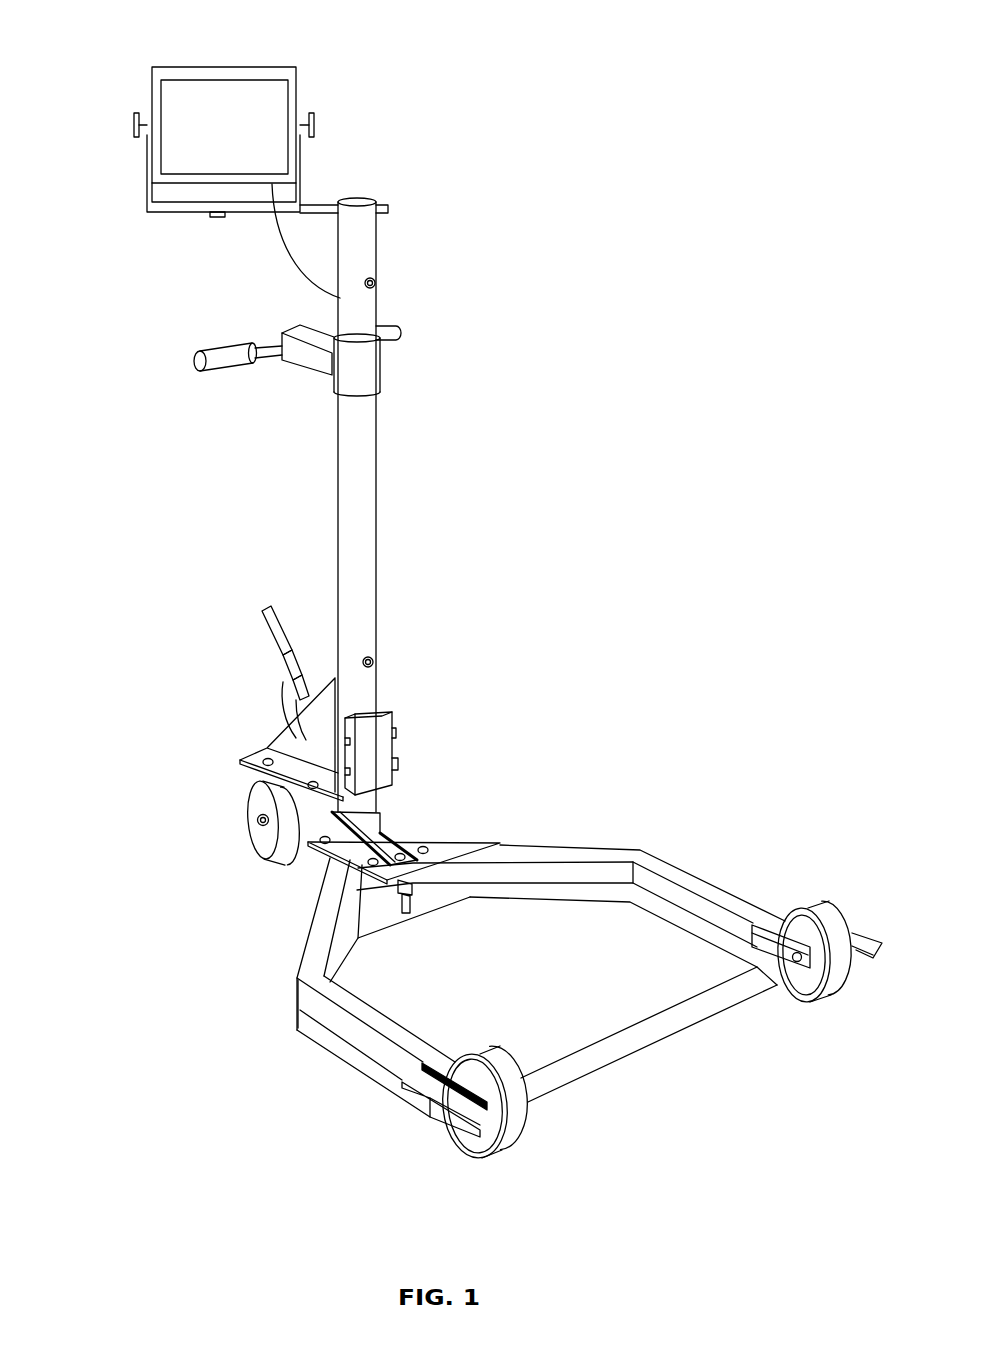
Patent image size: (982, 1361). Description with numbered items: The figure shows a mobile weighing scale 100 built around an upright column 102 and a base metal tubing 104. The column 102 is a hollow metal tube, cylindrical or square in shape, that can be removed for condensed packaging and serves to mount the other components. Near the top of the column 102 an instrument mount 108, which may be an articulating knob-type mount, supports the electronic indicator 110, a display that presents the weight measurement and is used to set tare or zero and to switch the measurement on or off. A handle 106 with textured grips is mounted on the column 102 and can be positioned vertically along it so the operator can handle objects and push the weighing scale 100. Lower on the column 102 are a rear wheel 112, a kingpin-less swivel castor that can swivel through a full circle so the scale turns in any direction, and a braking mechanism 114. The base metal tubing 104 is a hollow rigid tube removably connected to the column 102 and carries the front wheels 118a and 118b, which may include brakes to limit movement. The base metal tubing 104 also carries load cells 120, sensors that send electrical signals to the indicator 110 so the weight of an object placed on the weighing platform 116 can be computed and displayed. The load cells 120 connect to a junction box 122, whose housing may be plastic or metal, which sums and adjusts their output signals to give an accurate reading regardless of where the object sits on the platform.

The weighing scale 100 is at (116, 44).
The column 102 is at (370, 458).
The base metal tubing 104 is at (307, 1002).
The handle 106 is at (194, 362).
The instrument mount 108 is at (366, 196).
The electronic indicator 110 is at (145, 160).
The rear wheel 112 is at (249, 832).
The braking mechanism 114 is at (257, 613).
The weighing platform 116 is at (592, 986).
The front wheel 118a is at (460, 1143).
The front wheel 118b is at (857, 972).
The load cells 120 is at (408, 838).
The junction box 122 is at (375, 713).